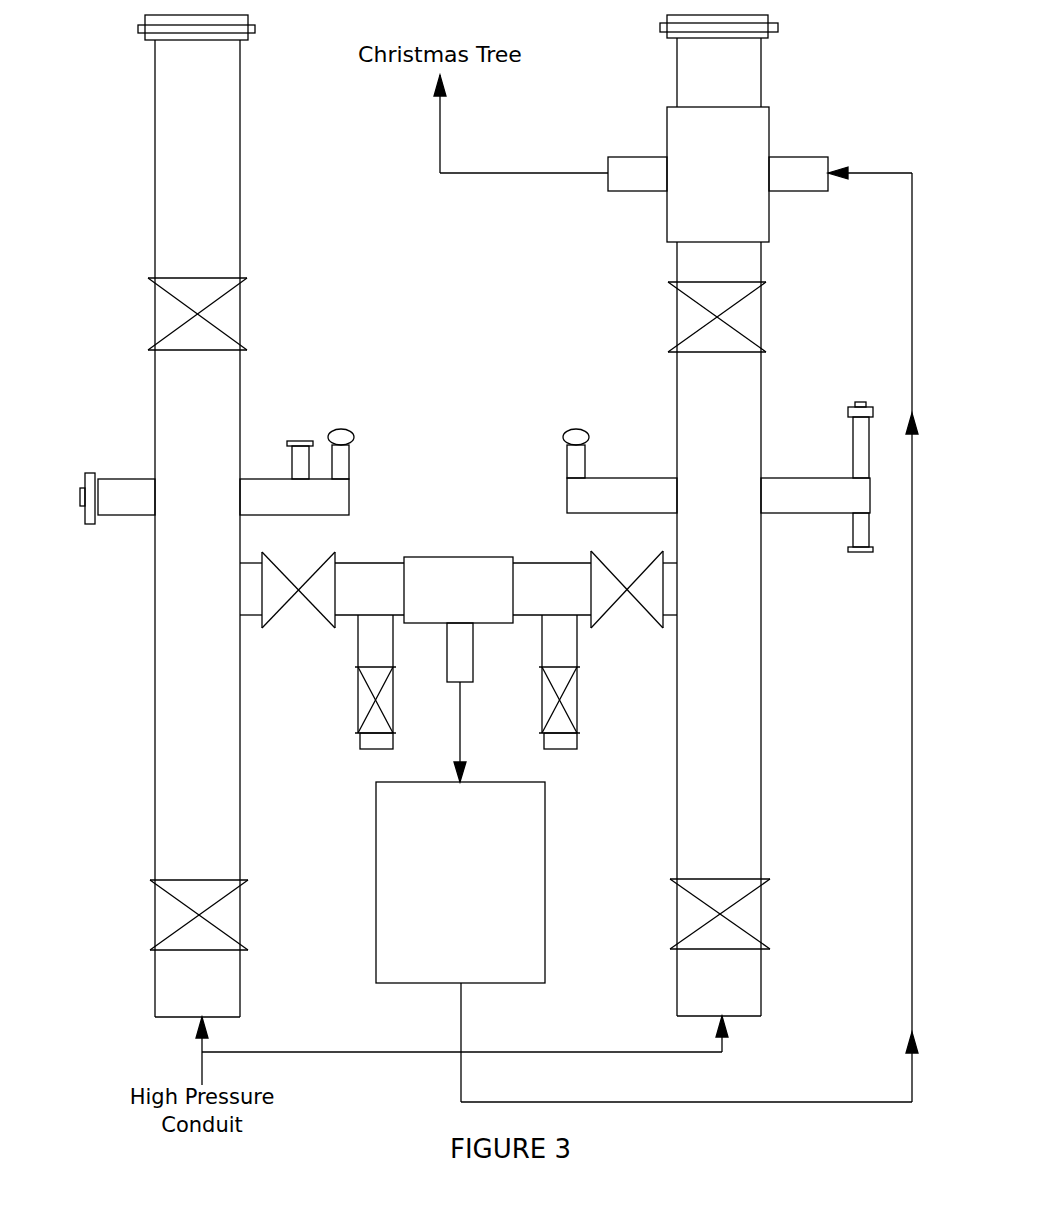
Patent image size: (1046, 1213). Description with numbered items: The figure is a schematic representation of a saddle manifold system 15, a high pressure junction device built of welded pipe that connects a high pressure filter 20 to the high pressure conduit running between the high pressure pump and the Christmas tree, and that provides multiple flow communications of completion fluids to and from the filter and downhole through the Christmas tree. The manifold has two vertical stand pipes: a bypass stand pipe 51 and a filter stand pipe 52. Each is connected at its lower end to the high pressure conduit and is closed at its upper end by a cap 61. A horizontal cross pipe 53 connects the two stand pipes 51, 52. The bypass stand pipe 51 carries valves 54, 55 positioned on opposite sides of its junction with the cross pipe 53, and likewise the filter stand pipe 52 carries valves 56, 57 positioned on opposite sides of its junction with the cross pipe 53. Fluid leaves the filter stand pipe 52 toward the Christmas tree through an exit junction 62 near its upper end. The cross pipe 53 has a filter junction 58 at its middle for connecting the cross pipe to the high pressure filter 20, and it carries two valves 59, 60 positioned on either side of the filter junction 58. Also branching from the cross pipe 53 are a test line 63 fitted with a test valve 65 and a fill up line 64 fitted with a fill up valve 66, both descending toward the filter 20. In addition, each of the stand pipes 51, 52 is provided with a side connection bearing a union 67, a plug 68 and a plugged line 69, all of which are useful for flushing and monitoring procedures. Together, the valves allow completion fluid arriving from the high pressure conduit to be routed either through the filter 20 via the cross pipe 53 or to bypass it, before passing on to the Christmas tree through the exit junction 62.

The saddle manifold system 15 is at (452, 281).
The high pressure filter 20 is at (510, 950).
The bypass stand pipe 51 is at (210, 815).
The filter stand pipe 52 is at (727, 778).
The cross pipe 53 is at (358, 597).
The valve 54 is at (202, 892).
The valve 55 is at (198, 290).
The valve 56 is at (722, 890).
The valve 57 is at (718, 293).
The filter junction 58 is at (442, 585).
The valve 59 is at (322, 588).
The valve 60 is at (603, 585).
The cap 61 is at (148, 42).
The exit junction 62 is at (707, 152).
The test line 63 is at (375, 643).
The fill up line 64 is at (557, 648).
The test valve 65 is at (375, 725).
The fill up valve 66 is at (560, 723).
The union 67 is at (92, 470).
The plug 68 is at (293, 438).
The plugged line 69 is at (345, 425).